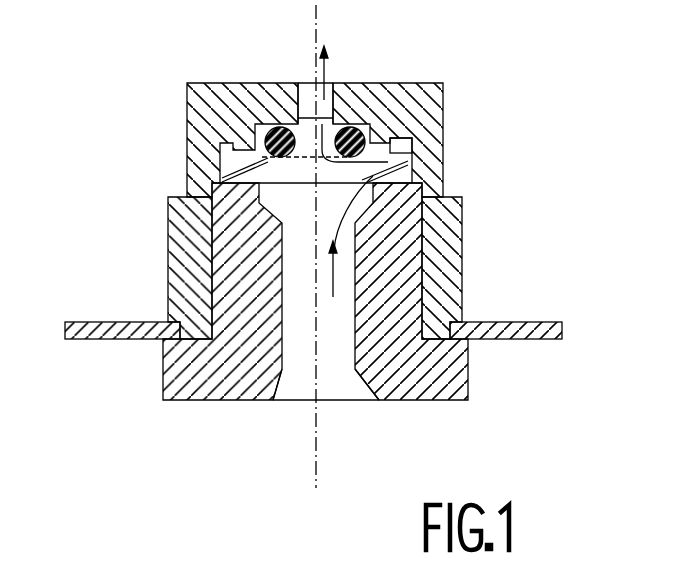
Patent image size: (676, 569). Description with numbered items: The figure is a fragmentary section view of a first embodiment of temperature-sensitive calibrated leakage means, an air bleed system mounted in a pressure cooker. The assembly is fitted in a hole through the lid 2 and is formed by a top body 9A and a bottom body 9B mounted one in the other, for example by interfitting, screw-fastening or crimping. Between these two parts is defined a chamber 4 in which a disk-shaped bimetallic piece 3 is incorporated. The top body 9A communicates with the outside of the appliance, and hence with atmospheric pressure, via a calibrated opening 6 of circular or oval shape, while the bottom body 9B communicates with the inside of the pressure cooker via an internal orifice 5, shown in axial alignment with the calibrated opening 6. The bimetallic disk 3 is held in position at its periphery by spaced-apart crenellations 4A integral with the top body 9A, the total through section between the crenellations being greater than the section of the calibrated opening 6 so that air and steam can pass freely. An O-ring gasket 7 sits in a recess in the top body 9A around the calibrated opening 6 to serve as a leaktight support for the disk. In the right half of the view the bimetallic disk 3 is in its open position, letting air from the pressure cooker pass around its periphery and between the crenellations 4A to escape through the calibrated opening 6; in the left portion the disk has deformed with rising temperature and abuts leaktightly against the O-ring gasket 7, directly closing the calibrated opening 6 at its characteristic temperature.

The lid 2 is at (513, 322).
The bimetallic piece 3 is at (220, 162).
The chamber 4 is at (261, 145).
The crenellations 4A is at (412, 143).
The internal orifice 5 is at (292, 388).
The calibrated opening 6 is at (308, 106).
The O-ring gasket 7 is at (359, 122).
The top body 9A is at (444, 225).
The bottom body 9B is at (448, 367).